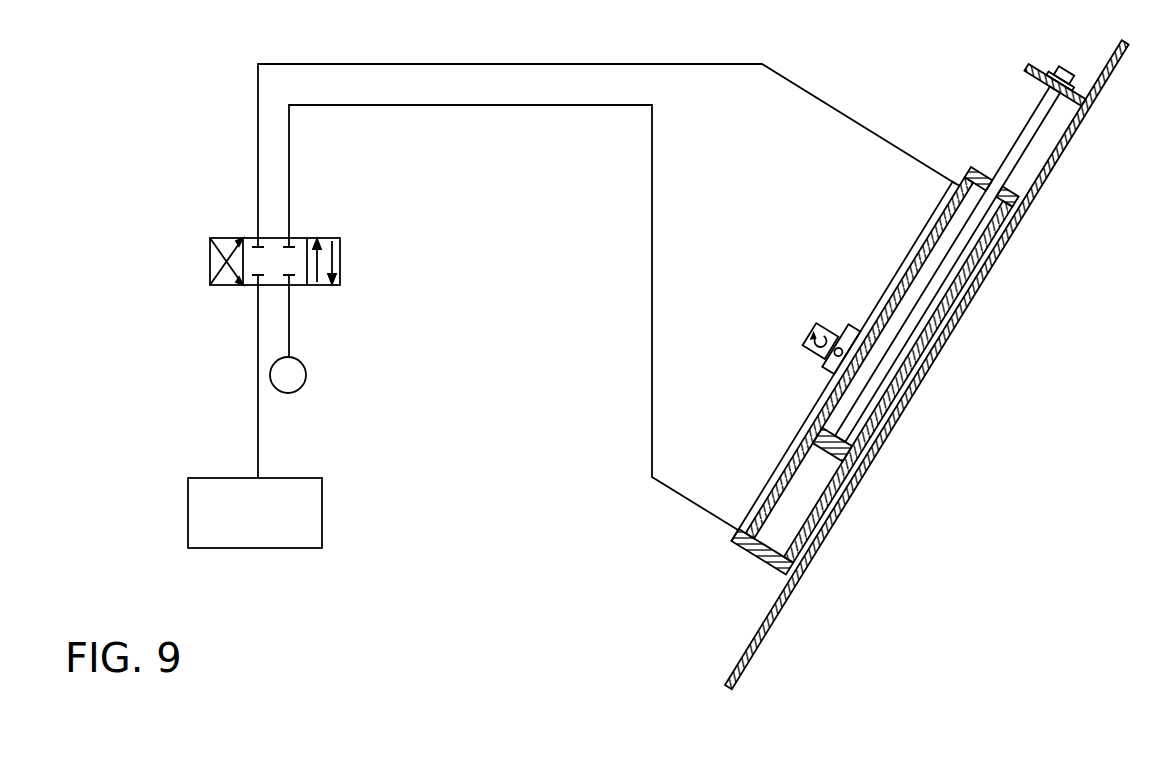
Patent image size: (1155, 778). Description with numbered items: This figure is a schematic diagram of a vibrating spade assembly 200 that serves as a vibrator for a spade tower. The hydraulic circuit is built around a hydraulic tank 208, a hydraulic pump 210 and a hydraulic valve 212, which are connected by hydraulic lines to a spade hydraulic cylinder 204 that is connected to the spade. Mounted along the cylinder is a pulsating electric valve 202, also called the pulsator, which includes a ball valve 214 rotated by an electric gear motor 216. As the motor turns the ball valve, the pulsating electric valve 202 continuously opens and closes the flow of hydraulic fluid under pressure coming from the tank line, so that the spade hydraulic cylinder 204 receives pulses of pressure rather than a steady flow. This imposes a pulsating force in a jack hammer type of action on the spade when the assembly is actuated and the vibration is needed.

The vibrating spade assembly 200 is at (1012, 253).
The pulsating electric valve 202 is at (850, 327).
The spade hydraulic cylinder 204 is at (1027, 130).
The hydraulic tank 208 is at (322, 508).
The hydraulic pump 210 is at (306, 375).
The hydraulic valve 212 is at (342, 275).
The ball valve 214 is at (823, 365).
The electric gear motor 216 is at (808, 331).